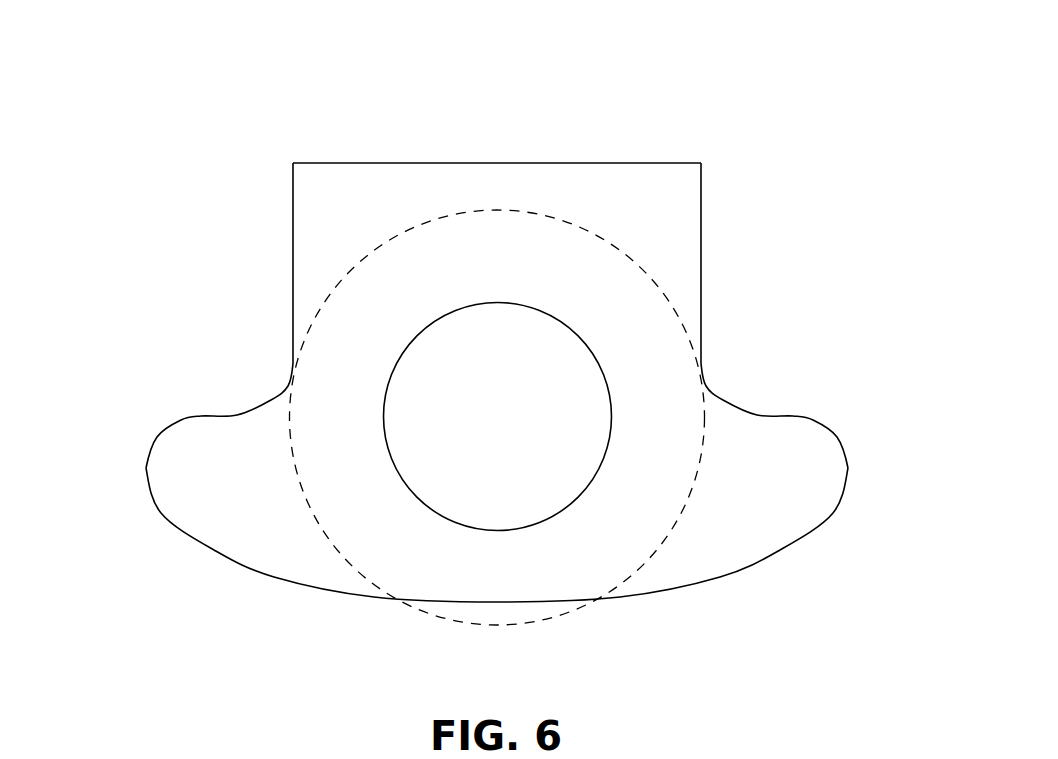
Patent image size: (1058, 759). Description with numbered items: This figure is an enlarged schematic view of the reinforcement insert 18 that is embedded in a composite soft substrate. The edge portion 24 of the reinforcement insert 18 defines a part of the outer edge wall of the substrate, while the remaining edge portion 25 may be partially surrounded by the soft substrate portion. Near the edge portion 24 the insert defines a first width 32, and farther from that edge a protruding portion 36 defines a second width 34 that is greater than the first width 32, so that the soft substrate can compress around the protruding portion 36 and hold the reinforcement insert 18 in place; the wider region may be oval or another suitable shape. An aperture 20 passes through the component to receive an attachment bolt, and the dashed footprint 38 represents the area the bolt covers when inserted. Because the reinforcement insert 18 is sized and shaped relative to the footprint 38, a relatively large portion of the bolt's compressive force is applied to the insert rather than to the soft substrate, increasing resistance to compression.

The reinforcement insert 18 is at (285, 88).
The aperture 20 is at (509, 438).
The edge portion 24 is at (504, 163).
The remaining edge portion 25 is at (293, 295).
The first width 32 is at (217, 189).
The second width 34 is at (70, 468).
The protruding portion 36 is at (757, 415).
The footprint 38 is at (563, 614).